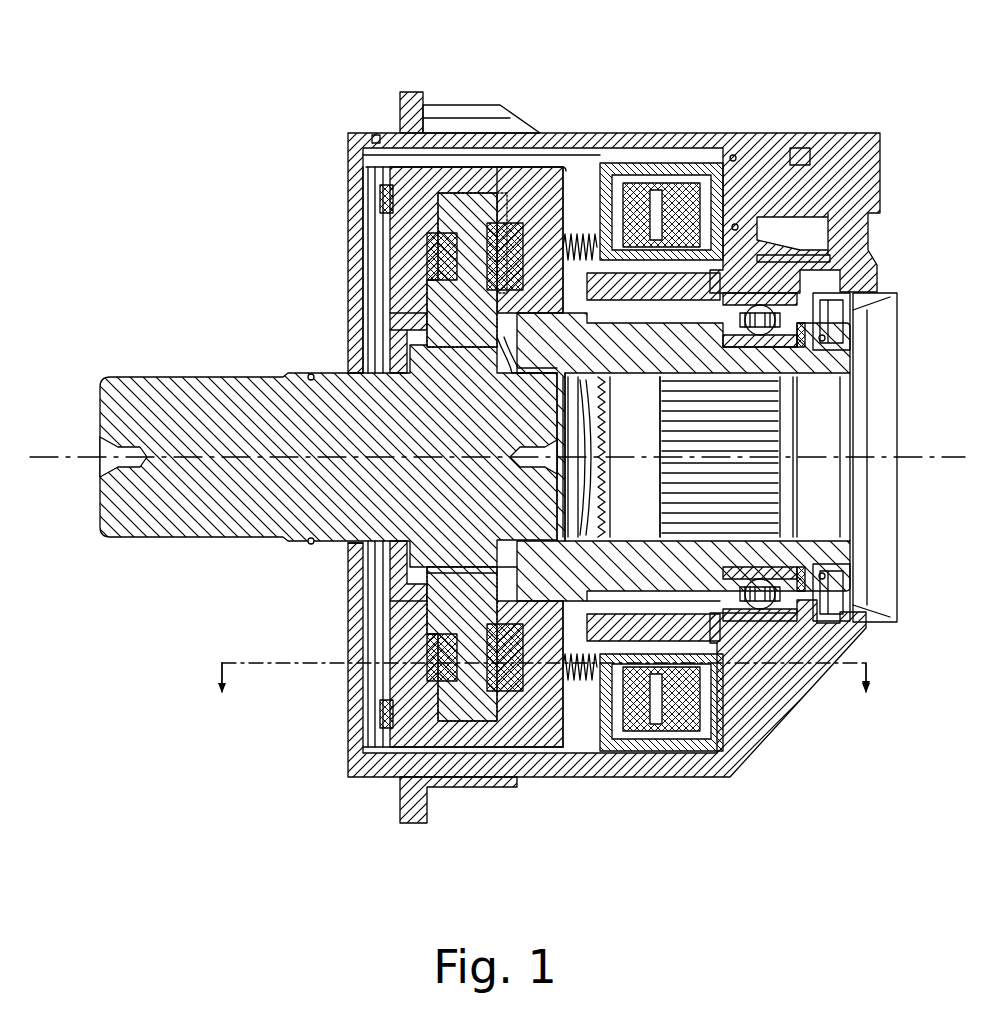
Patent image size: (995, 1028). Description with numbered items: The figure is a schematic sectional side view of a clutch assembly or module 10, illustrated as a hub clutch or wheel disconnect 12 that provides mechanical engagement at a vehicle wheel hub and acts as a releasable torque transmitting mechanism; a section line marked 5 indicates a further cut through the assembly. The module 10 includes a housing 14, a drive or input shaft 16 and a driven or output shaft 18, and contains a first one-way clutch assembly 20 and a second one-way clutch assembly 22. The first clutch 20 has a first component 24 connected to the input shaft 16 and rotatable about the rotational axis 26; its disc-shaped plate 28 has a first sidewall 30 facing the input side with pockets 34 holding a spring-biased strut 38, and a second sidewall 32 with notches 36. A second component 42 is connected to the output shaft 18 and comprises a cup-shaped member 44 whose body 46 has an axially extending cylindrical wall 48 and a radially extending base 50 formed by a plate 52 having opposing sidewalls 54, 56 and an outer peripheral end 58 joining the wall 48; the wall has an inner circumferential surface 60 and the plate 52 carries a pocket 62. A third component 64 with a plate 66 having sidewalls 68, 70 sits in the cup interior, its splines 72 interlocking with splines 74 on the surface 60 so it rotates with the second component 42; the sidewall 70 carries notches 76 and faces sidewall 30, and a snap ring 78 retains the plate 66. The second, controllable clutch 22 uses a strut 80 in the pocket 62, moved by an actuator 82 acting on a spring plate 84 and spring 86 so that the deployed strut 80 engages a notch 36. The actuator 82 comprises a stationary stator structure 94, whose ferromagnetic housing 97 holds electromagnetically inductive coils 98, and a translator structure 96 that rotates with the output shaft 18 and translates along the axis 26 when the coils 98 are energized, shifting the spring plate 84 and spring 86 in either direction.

The clutch assembly 10 is at (720, 78).
The hub clutch 12 is at (796, 700).
The housing 14 is at (625, 212).
The input shaft 16 is at (122, 520).
The output shaft 18 is at (895, 605).
The first one-way clutch assembly 20 is at (420, 645).
The second one-way clutch assembly 22 is at (470, 240).
The first component 24 is at (458, 190).
The rotational axis 26 is at (70, 457).
The disc-shaped member or plate 28 is at (470, 187).
The first sidewall 30 is at (395, 178).
The second sidewall 32 is at (500, 345).
The pockets 34 is at (377, 280).
The notches 36 is at (485, 225).
The strut 38 is at (385, 205).
The second component 42 is at (541, 160).
The cup-shaped member 44 is at (600, 758).
The body 46 is at (635, 740).
The annular or cylindrical wall 48 is at (395, 748).
The base 50 is at (430, 590).
The disc-shaped member or plate 52 is at (627, 733).
The first sidewall 54 is at (510, 680).
The second sidewall 56 is at (580, 238).
The outer peripheral end 58 is at (658, 755).
The inner circumferential surface 60 is at (440, 742).
The pocket 62 is at (555, 690).
The third component 64 is at (400, 172).
The disc-shaped member or plate 66 is at (372, 242).
The first sidewall 68 is at (395, 300).
The second sidewall 70 is at (395, 318).
The splines 72 is at (432, 195).
The splines 74 is at (380, 160).
The notches 76 is at (483, 237).
The snap ring 78 is at (385, 715).
The strut 80 is at (520, 660).
The actuator 82 is at (760, 210).
The spring plate 84 is at (660, 178).
The spring 86 is at (606, 272).
The stator structure 94 is at (778, 232).
The translator structure 96 is at (760, 262).
The ferromagnetic housing 97 is at (738, 150).
The electromagnetically inductive coils 98 is at (792, 160).
The section line 5- 5 is at (544, 690).